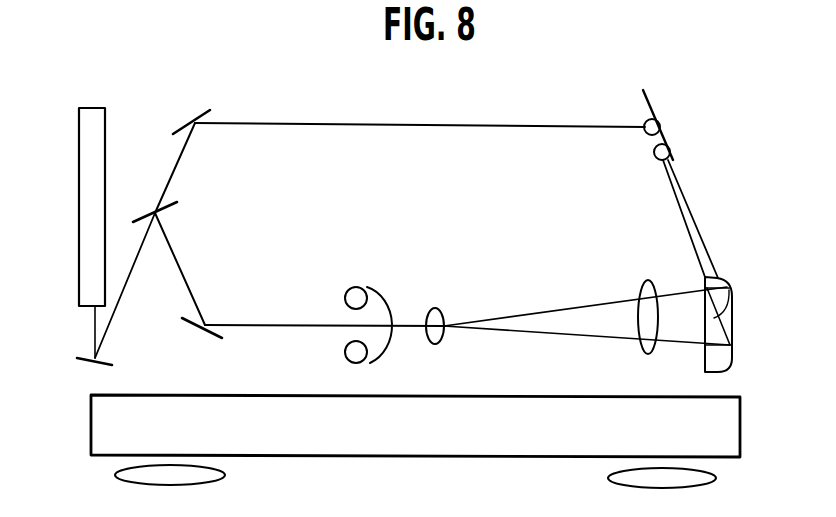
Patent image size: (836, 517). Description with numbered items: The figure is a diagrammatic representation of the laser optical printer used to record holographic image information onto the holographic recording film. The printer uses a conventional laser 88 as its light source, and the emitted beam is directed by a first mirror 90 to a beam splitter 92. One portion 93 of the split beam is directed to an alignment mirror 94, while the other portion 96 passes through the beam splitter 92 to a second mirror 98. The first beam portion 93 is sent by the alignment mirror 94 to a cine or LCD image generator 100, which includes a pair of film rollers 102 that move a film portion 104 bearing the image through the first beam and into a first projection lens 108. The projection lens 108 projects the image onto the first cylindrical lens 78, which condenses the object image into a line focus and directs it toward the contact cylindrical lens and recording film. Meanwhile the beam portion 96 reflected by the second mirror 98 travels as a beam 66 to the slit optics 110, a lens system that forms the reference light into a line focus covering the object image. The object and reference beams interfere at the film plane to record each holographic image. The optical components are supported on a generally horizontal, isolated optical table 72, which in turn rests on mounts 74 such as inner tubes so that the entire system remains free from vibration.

The light beam 66 is at (382, 123).
The optical table 72 is at (93, 418).
The mounts 74 is at (117, 477).
The first cylindrical lens 78 is at (642, 277).
The laser 88 is at (79, 217).
The first mirror 90 is at (85, 360).
The beam splitter 92 is at (140, 213).
The first beam portion 93 is at (190, 285).
The alignment mirror 94 is at (210, 338).
The second beam portion 96 is at (175, 172).
The second mirror 98 is at (197, 112).
The cine or LCD image generator 100 is at (330, 300).
The film rollers 102 is at (350, 288).
The film portion 104 is at (390, 313).
The first projection lens 108 is at (445, 307).
The slit optics 110 is at (660, 120).